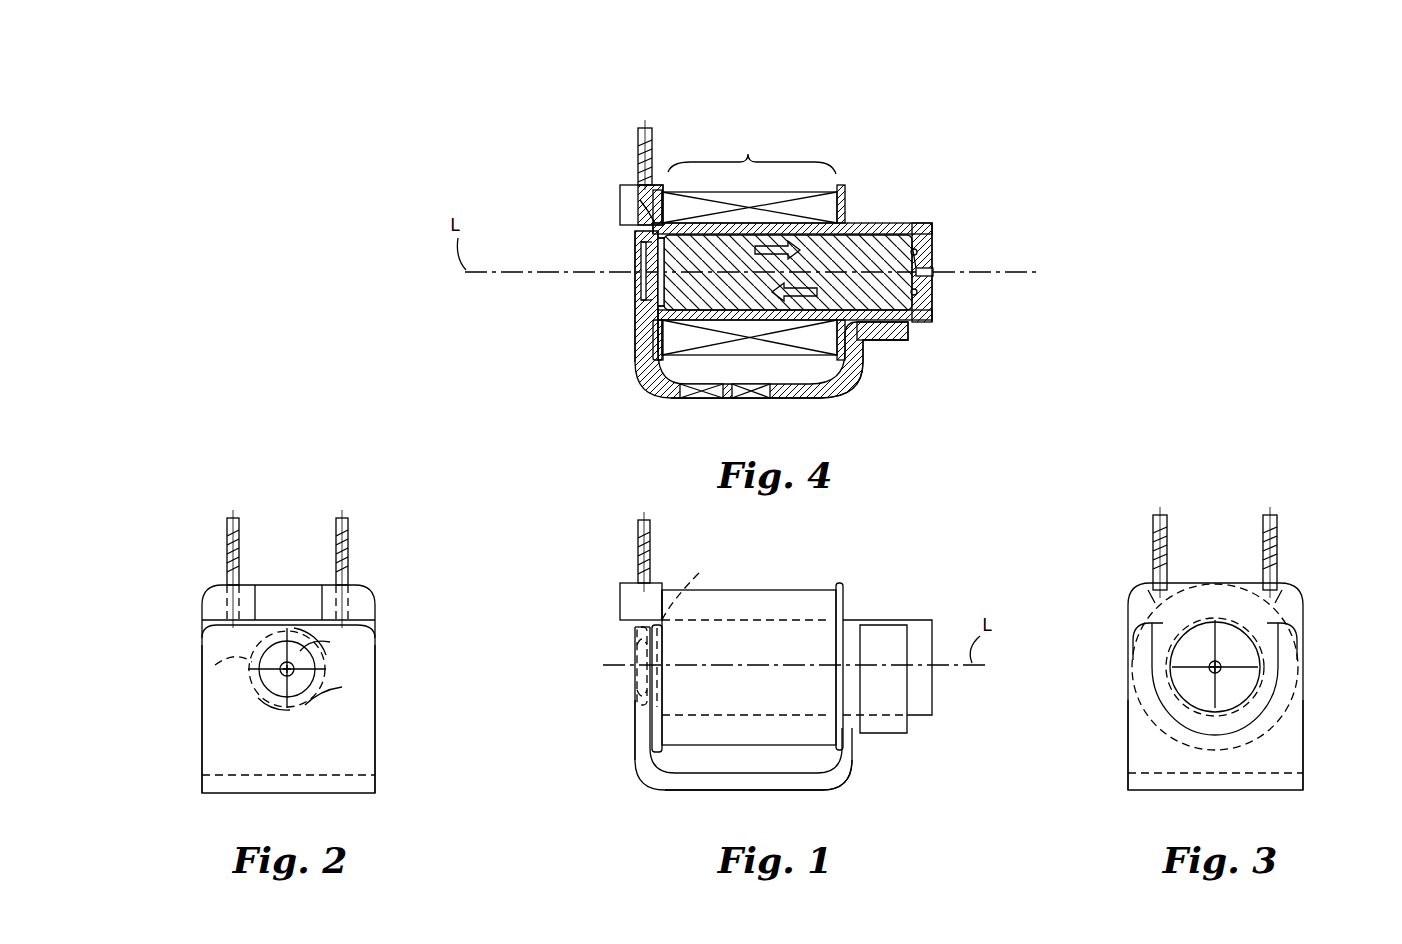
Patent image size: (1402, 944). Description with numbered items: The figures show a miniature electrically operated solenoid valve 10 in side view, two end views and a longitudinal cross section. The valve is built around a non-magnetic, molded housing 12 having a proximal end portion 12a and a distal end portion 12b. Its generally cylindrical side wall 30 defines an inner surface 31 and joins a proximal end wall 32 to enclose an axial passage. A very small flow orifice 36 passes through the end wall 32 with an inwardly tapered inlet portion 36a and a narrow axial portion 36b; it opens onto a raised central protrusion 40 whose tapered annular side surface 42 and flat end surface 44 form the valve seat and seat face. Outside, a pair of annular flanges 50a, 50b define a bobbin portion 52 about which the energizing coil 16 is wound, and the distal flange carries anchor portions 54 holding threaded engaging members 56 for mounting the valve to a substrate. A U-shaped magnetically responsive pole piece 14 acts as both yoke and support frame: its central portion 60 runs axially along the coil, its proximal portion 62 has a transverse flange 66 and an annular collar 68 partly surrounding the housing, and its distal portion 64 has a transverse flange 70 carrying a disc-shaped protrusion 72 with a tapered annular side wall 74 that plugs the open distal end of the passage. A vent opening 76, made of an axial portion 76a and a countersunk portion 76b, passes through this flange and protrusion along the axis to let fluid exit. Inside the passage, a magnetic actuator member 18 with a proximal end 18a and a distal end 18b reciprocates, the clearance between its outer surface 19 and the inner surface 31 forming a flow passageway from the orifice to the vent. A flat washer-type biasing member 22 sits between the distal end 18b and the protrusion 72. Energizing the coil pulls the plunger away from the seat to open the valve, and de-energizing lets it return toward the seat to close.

In FIG. 4, the solenoid valve 10 is at (612, 84).
In FIG. 1, the solenoid valve 10 is at (861, 548).
In FIG. 4, the housing 12 is at (799, 229).
In FIG. 1, the housing 12 is at (777, 620).
In FIG. 2, the housing 12 is at (293, 670).
In FIG. 3, the housing 12 is at (1222, 652).
In FIG. 4, the proximal end portion 12a is at (929, 216).
In FIG. 1, the proximal end portion 12a is at (936, 608).
In FIG. 4, the distal end portion 12b is at (601, 212).
In FIG. 1, the distal end portion 12b is at (616, 562).
In FIG. 4, the pole piece 14 is at (778, 336).
In FIG. 1, the pole piece 14 is at (729, 728).
In FIG. 2, the pole piece 14 is at (274, 719).
In FIG. 3, the pole piece 14 is at (1230, 709).
In FIG. 4, the energizing coil 16 is at (781, 206).
In FIG. 4, the actuator member 18 is at (762, 386).
In FIG. 4, the proximal end 18a is at (932, 300).
In FIG. 4, the distal end 18b is at (642, 245).
In FIG. 4, the outer surface 19 is at (720, 392).
In FIG. 4, the biasing member 22 is at (652, 300).
In FIG. 4, the side wall 30 is at (896, 222).
In FIG. 4, the inner surface 31 is at (862, 226).
In FIG. 4, the proximal end wall 32 is at (932, 290).
In FIG. 4, the flow orifice 36 is at (936, 268).
In FIG. 3, the flow orifice 36 is at (1222, 667).
In FIG. 3, the inwardly tapered inlet portion 36a is at (1258, 667).
In FIG. 3, the axial portion 36b is at (1187, 640).
In FIG. 4, the protrusion 40 is at (930, 262).
In FIG. 4, the annular side surface 42 is at (925, 258).
In FIG. 4, the flat end surface 44 is at (932, 280).
In FIG. 4, the annular flange 50a is at (841, 185).
In FIG. 1, the annular flange 50a is at (842, 738).
In FIG. 3, the annular flange 50a is at (1211, 590).
In FIG. 4, the annular flange 50b is at (657, 200).
In FIG. 1, the annular flange 50b is at (652, 738).
In FIG. 4, the bobbin portion 52 is at (749, 239).
In FIG. 4, the anchor portions 54 is at (636, 187).
In FIG. 1, the anchor portions 54 is at (623, 600).
In FIG. 2, the anchor portions 54 is at (212, 598).
In FIG. 4, the engaging members 56 is at (641, 140).
In FIG. 1, the engaging members 56 is at (651, 545).
In FIG. 2, the engaging members 56 is at (231, 546).
In FIG. 3, the engaging members 56 is at (1155, 546).
In FIG. 4, the central portion 60 is at (680, 400).
In FIG. 1, the central portion 60 is at (731, 785).
In FIG. 4, the proximal portion 62 is at (859, 382).
In FIG. 1, the proximal portion 62 is at (861, 773).
In FIG. 3, the proximal portion 62 is at (1296, 738).
In FIG. 4, the distal portion 64 is at (639, 370).
In FIG. 1, the distal portion 64 is at (639, 771).
In FIG. 2, the distal portion 64 is at (352, 752).
In FIG. 4, the transverse flange 66 is at (870, 362).
In FIG. 3, the transverse flange 66 is at (1147, 757).
In FIG. 4, the annular collar 68 is at (900, 340).
In FIG. 3, the annular collar 68 is at (1167, 702).
In FIG. 4, the transverse flange 70 is at (648, 366).
In FIG. 1, the transverse flange 70 is at (642, 718).
In FIG. 2, the transverse flange 70 is at (351, 719).
In FIG. 4, the disc-shaped protrusion 72 is at (656, 346).
In FIG. 1, the disc-shaped protrusion 72 is at (669, 639).
In FIG. 2, the disc-shaped protrusion 72 is at (215, 665).
In FIG. 4, the tapered annular side wall 74 is at (641, 210).
In FIG. 1, the tapered annular side wall 74 is at (686, 585).
In FIG. 4, the vent opening 76 is at (563, 271).
In FIG. 1, the vent opening 76 is at (592, 655).
In FIG. 2, the vent opening 76 is at (294, 670).
In FIG. 4, the axial portion 76a is at (636, 278).
In FIG. 1, the axial portion 76a is at (637, 633).
In FIG. 2, the axial portion 76a is at (330, 642).
In FIG. 4, the countersunk portion 76b is at (638, 290).
In FIG. 1, the countersunk portion 76b is at (637, 700).
In FIG. 2, the countersunk portion 76b is at (342, 687).